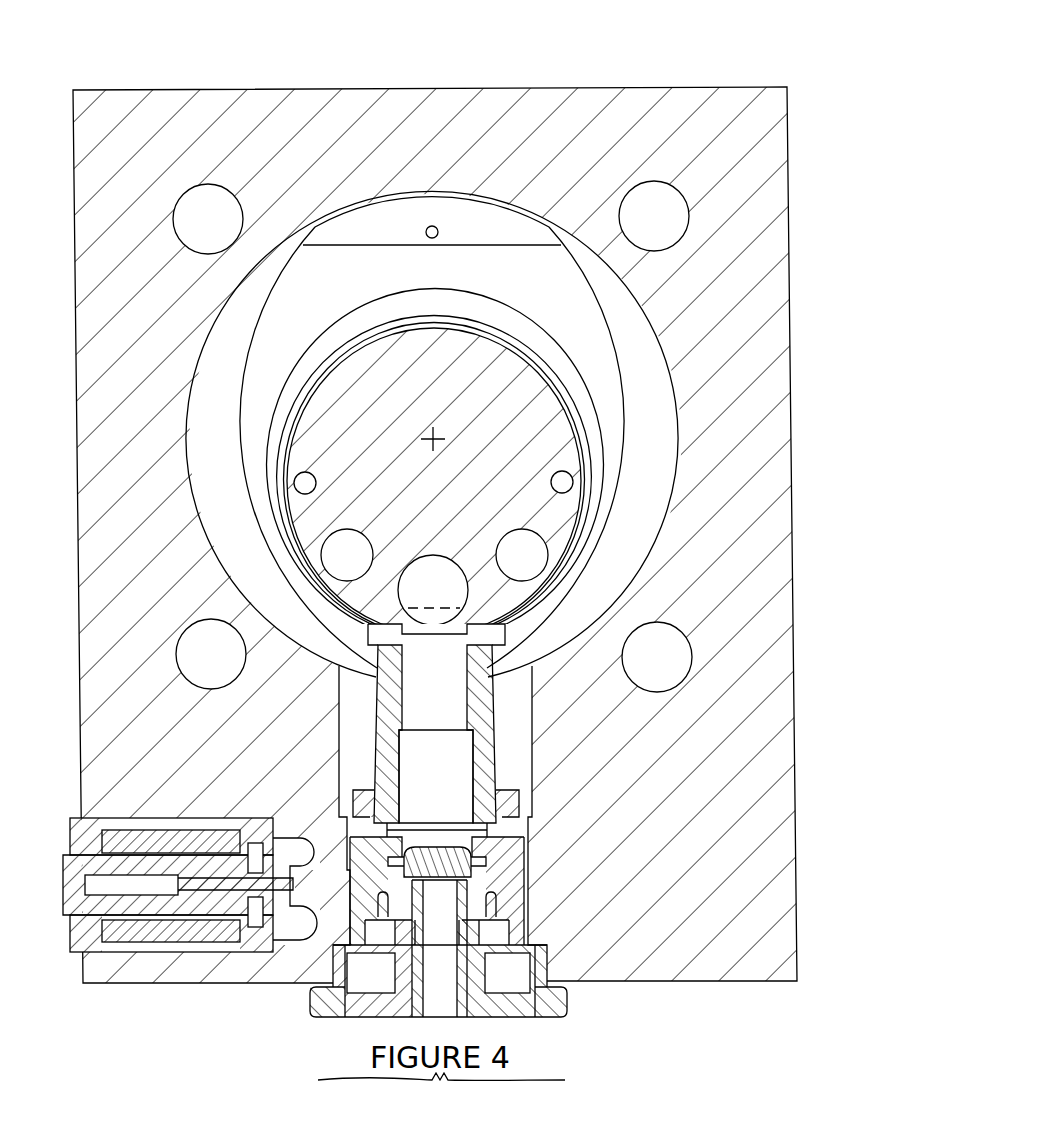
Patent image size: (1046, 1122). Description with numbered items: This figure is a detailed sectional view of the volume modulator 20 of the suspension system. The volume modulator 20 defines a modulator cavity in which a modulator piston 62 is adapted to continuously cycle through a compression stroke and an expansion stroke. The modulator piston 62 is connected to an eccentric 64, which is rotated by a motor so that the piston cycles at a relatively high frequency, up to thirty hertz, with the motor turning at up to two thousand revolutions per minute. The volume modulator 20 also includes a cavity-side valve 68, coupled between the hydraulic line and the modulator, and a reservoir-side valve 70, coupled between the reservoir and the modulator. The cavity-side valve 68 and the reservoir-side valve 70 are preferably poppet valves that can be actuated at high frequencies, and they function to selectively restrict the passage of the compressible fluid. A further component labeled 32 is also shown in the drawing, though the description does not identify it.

The volume modulator 20 is at (570, 58).
The valve seat 32 is at (517, 848).
The modulator piston 62 is at (503, 777).
The eccentric 64 is at (537, 510).
The cavity-side valve 68 is at (285, 950).
The reservoir-side valve 70 is at (530, 890).